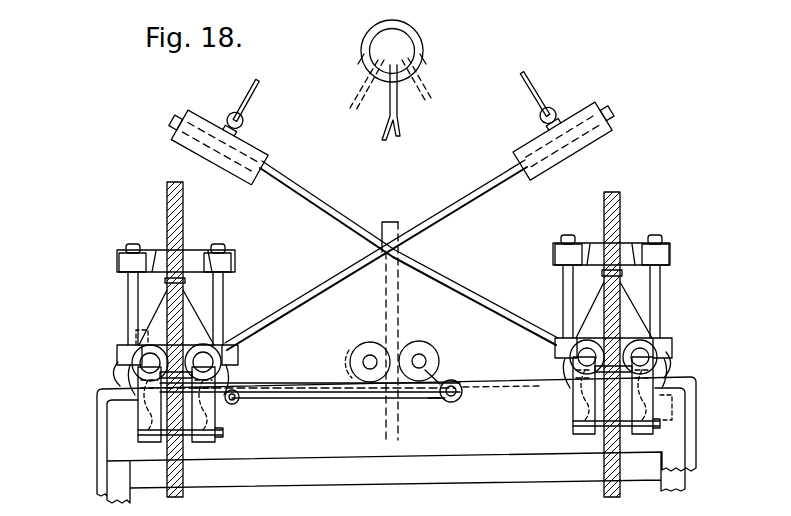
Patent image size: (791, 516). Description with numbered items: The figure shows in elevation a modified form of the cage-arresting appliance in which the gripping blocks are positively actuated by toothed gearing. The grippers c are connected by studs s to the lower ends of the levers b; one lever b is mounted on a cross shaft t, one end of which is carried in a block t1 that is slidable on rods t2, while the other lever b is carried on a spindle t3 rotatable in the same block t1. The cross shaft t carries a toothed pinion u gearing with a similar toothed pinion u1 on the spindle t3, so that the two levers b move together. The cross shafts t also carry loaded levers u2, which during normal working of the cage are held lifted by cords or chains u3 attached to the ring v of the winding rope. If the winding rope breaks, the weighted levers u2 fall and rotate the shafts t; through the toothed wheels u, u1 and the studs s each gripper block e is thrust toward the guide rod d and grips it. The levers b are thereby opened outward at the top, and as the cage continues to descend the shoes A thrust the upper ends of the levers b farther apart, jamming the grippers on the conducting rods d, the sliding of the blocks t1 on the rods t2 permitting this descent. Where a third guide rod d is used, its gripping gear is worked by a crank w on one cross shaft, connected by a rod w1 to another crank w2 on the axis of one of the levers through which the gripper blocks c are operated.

The ring of the winding rope v is at (380, 80).
The toothed pinion u is at (208, 347).
The toothed pinion u1 is at (146, 332).
The loaded lever u2 is at (346, 220).
The cord or chain u3 is at (252, 94).
The shoe A is at (192, 262).
The guide rod d is at (618, 206).
The cross shaft t is at (292, 344).
The block t1 is at (124, 348).
The rod t2 is at (125, 286).
The spindle t3 is at (116, 357).
The lever b is at (200, 321).
The gripper c is at (140, 426).
The stud s is at (126, 382).
The gripper block e is at (650, 419).
The crank w is at (240, 406).
The rod w1 is at (343, 397).
The crank w2 is at (446, 382).